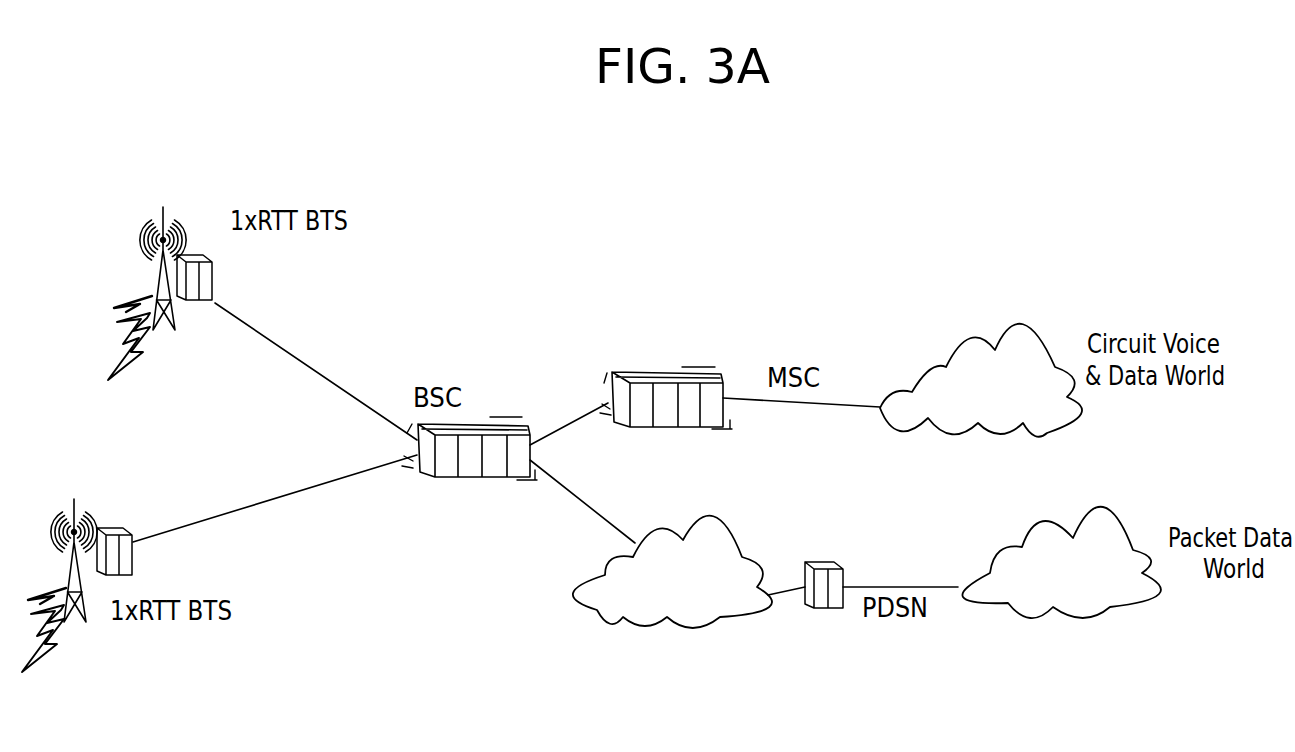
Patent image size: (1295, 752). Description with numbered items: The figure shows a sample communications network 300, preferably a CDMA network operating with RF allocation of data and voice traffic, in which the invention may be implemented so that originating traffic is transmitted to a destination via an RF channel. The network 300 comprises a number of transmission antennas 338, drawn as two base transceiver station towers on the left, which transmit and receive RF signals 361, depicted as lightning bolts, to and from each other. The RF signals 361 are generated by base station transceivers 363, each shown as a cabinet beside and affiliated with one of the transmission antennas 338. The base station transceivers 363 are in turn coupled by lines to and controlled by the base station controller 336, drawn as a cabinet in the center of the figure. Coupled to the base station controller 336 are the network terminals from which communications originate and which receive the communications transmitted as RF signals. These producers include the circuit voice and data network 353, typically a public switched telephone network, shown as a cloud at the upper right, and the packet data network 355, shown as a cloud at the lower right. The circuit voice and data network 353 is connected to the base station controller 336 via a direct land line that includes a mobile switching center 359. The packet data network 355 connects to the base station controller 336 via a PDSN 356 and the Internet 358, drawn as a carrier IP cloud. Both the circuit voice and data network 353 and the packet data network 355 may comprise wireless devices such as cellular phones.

The network 300 is at (908, 241).
The transmission antenna 338 is at (74, 508).
The base station transceiver 363 is at (124, 497).
The RF signal 361 is at (47, 694).
The base station controller 336 is at (485, 422).
The mobile switching center 359 is at (647, 372).
The circuit voice and data network 353 is at (1013, 323).
The Internet 358 is at (694, 517).
The PDSN 356 is at (823, 560).
The packet data network 355 is at (1122, 510).